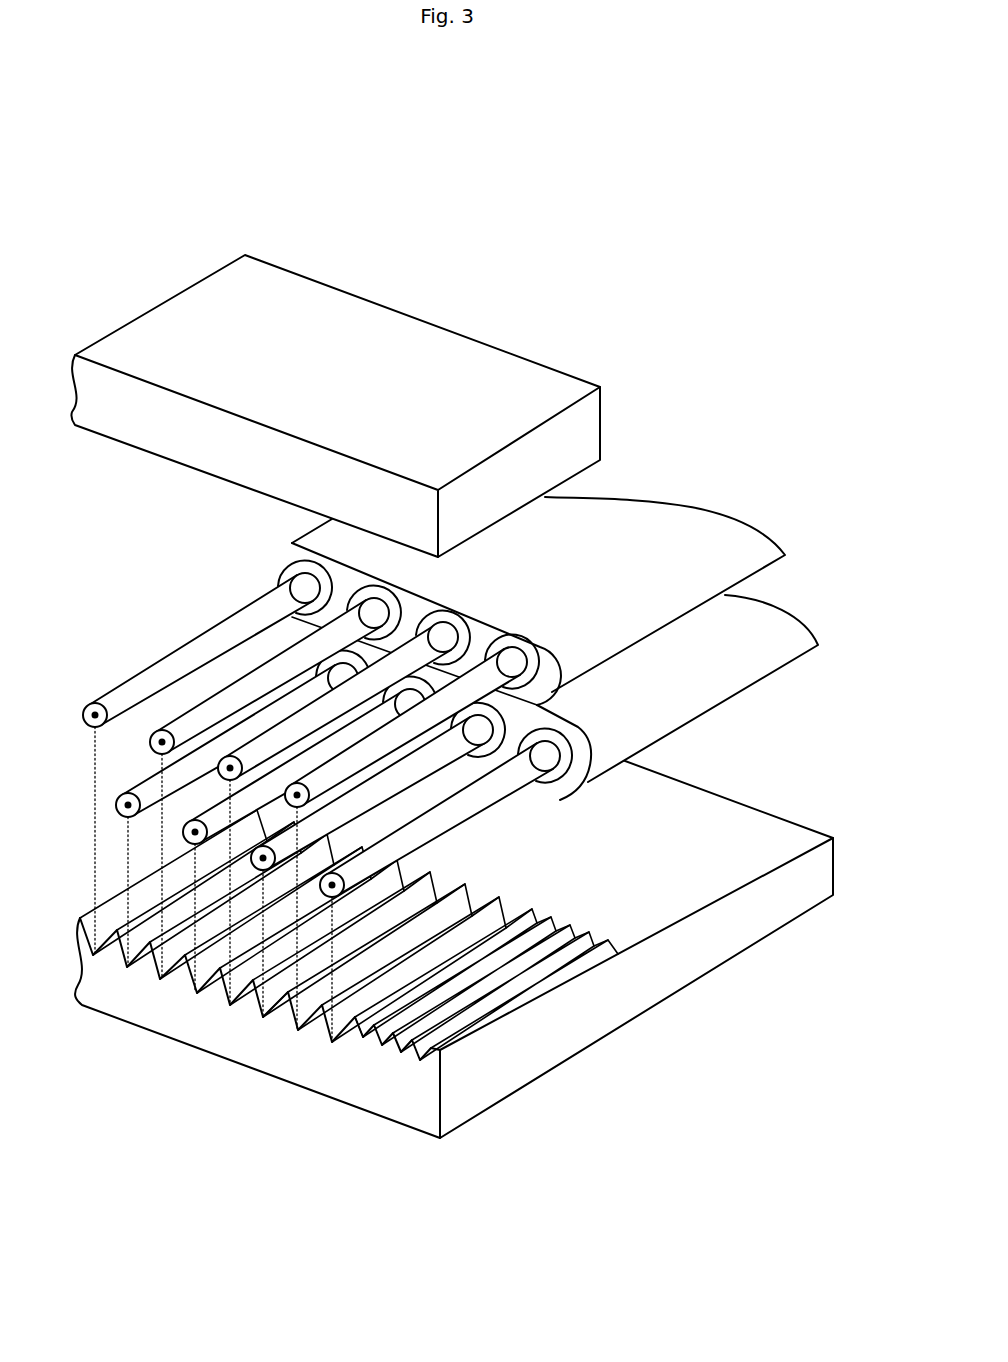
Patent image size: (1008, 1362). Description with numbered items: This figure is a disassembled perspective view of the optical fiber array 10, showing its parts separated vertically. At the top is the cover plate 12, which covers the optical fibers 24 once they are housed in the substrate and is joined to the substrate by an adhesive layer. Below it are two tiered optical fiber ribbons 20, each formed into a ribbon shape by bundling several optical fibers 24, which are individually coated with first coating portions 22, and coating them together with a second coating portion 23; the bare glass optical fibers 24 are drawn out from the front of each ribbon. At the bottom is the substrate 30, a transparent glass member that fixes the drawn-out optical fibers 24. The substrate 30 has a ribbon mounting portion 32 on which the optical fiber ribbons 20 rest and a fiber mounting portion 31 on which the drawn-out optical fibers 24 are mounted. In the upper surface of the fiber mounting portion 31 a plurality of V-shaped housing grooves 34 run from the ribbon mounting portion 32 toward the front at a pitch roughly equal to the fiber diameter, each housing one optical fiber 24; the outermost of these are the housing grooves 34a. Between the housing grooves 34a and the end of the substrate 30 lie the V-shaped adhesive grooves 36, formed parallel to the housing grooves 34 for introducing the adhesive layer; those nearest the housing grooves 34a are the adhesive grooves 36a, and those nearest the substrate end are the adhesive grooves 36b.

The optical fiber array 10 is at (352, 214).
The cover plate 12 is at (588, 378).
The optical fiber ribbon 20 is at (447, 723).
The first coating portion 22 is at (292, 543).
The second coating portion 23 is at (273, 572).
The optical fiber 24 is at (177, 645).
The substrate 30 is at (463, 953).
The fiber mounting portion 31 is at (470, 1052).
The ribbon mounting portion 32 is at (712, 917).
The housing groove 34 is at (256, 1000).
The outermost housing groove 34a is at (294, 994).
The adhesive groove 36 is at (396, 1040).
The adhesive groove in the vicinity of the outermost housing groove 36a is at (352, 1033).
The adhesive groove in the vicinity of the substrate end portion 36b is at (423, 1042).